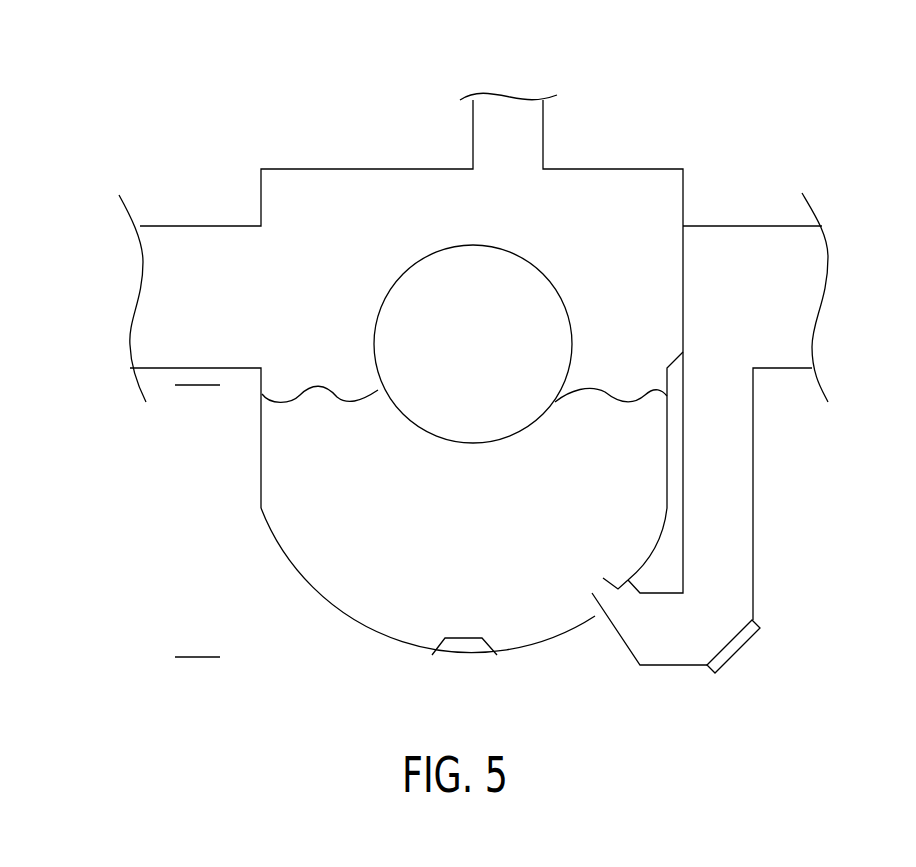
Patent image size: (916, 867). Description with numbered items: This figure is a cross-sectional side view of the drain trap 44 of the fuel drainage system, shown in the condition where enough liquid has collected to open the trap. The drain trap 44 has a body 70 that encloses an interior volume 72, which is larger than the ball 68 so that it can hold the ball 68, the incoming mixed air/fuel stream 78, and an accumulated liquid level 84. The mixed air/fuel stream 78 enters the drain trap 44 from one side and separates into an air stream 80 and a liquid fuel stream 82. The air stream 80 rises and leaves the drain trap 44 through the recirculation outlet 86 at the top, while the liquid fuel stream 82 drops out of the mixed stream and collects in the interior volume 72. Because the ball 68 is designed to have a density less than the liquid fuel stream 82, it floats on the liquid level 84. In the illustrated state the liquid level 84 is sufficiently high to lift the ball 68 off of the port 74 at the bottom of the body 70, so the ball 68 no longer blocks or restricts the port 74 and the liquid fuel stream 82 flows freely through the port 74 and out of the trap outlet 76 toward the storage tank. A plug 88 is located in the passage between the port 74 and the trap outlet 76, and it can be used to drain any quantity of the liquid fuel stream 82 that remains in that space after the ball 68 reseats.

The drain trap 44 is at (801, 71).
The ball 68 is at (473, 245).
The body 70 is at (260, 494).
The interior volume 72 is at (348, 210).
The port 74 is at (610, 597).
The trap outlet 76 is at (742, 250).
The mixed air/fuel stream 78 is at (160, 296).
The air stream 80 is at (508, 111).
The liquid fuel stream 82 is at (247, 336).
The liquid level 84 is at (198, 390).
The recirculation outlet 86 is at (543, 134).
The plug 88 is at (738, 655).